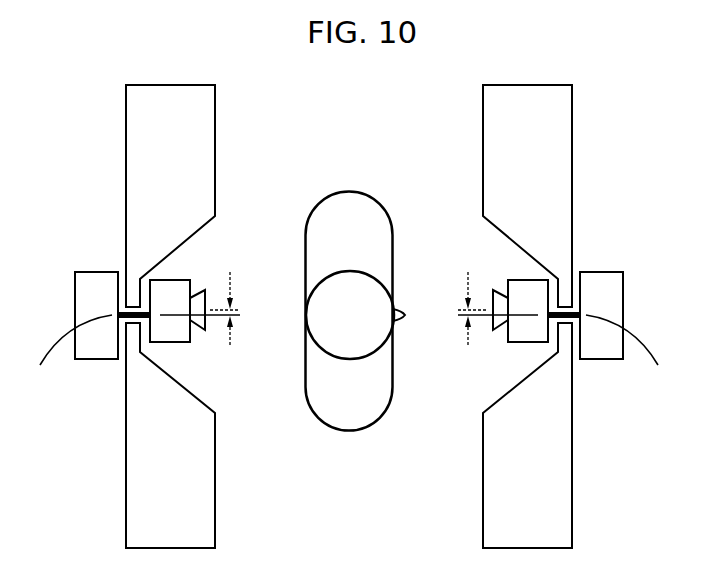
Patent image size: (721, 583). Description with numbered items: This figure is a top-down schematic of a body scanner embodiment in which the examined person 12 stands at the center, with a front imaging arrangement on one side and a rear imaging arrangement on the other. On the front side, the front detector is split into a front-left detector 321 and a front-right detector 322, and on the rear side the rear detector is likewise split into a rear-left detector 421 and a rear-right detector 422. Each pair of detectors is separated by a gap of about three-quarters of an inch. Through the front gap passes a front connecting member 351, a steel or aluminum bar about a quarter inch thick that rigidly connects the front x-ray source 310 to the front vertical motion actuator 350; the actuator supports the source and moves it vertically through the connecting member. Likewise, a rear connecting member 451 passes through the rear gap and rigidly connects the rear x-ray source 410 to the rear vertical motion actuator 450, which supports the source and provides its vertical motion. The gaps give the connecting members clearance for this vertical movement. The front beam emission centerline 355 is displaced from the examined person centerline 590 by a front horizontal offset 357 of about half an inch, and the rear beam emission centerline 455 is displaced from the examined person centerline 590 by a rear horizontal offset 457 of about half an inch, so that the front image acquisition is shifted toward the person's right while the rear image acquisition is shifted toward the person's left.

The examined person 12 is at (388, 203).
The front x-ray source 310 is at (527, 360).
The front-left detector 321 is at (600, 97).
The front-right detector 322 is at (600, 513).
The front vertical motion actuator 350 is at (606, 271).
The front connecting member 351 is at (636, 354).
The front beam emission centerline 355 is at (457, 318).
The front horizontal offset 357 is at (468, 272).
The rear x-ray source 410 is at (163, 348).
The rear-left detector 421 is at (116, 109).
The rear-right detector 422 is at (116, 523).
The rear vertical motion actuator 450 is at (95, 269).
The rear connecting member 451 is at (65, 353).
The rear beam emission centerline 455 is at (244, 309).
The rear horizontal offset 457 is at (230, 272).
The examined person centerline 590 is at (244, 318).